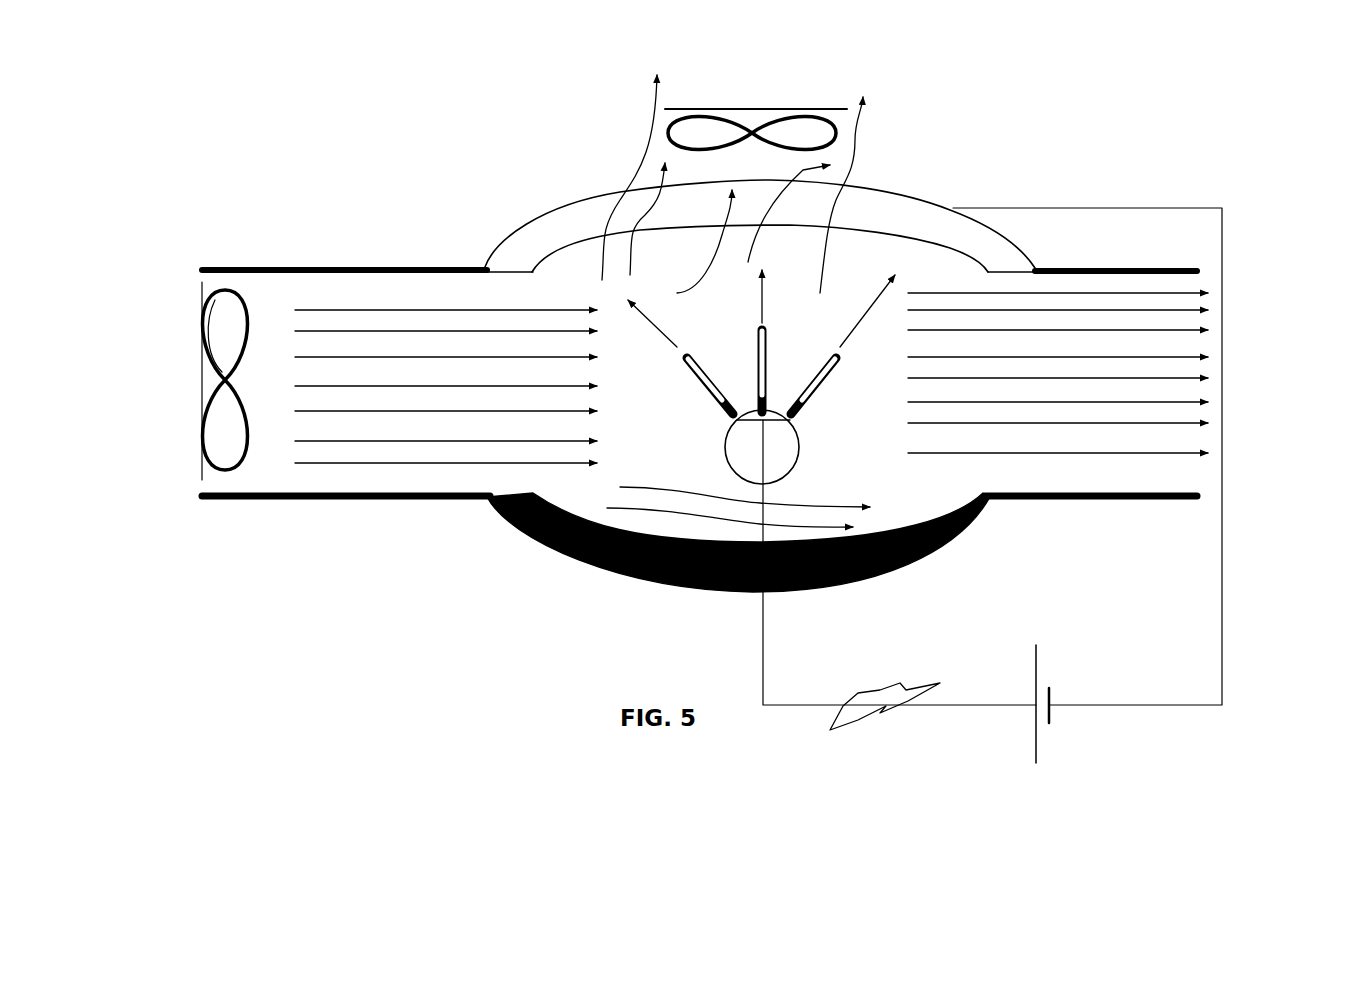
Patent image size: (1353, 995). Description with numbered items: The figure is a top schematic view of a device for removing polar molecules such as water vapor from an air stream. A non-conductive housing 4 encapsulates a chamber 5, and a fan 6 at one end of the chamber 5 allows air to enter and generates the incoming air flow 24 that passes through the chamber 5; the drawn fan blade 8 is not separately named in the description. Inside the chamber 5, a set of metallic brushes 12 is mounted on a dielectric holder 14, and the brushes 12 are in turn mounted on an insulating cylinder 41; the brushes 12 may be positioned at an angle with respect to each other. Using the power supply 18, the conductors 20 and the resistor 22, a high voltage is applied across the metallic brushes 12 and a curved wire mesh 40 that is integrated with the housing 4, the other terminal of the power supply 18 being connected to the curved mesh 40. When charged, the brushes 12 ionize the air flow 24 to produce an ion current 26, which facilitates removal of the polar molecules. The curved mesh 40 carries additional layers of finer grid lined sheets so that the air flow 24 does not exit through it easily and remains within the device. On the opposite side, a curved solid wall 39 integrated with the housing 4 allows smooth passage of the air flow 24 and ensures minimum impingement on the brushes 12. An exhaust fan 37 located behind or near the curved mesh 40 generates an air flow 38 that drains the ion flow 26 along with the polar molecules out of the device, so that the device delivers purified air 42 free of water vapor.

The non-conductive housing 4 is at (317, 268).
The chamber 5 is at (632, 387).
The fan 6 is at (202, 382).
The fan blade 8 is at (202, 325).
The metallic brush 12 is at (700, 385).
The dielectric holder 14 is at (800, 413).
The power supply 18 is at (1055, 737).
The conductors 20 is at (1227, 550).
The resistor 22 is at (830, 728).
The air flow 24 is at (440, 473).
The ion current 26 is at (857, 330).
The exhaust fan 37 is at (783, 117).
The air flow 38 is at (857, 160).
The curved solid wall 39 is at (547, 562).
The curved wire mesh 40 is at (530, 218).
The insulating cylinder 41 is at (797, 462).
The purified air 42 is at (1140, 355).